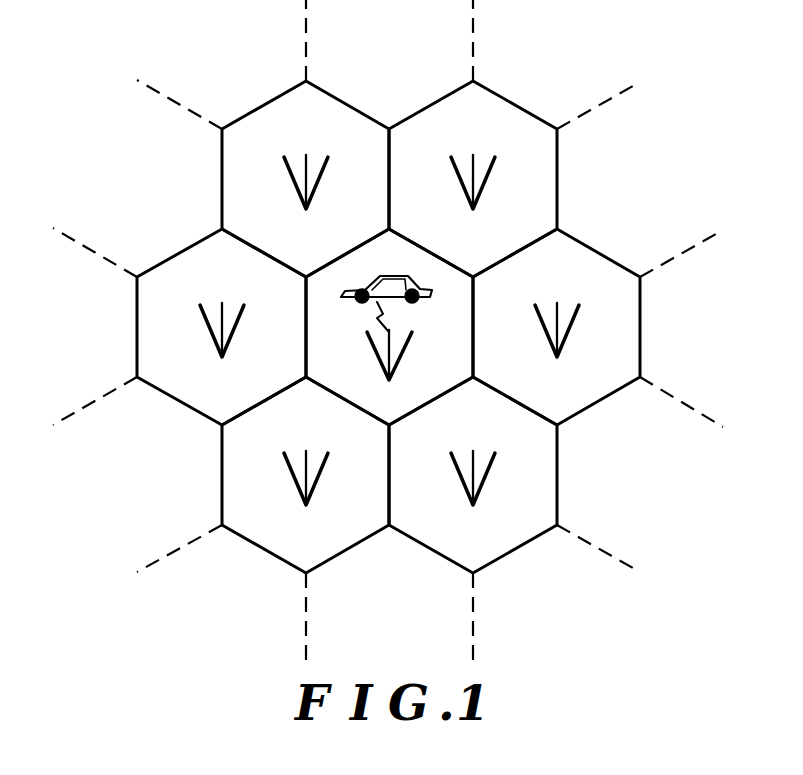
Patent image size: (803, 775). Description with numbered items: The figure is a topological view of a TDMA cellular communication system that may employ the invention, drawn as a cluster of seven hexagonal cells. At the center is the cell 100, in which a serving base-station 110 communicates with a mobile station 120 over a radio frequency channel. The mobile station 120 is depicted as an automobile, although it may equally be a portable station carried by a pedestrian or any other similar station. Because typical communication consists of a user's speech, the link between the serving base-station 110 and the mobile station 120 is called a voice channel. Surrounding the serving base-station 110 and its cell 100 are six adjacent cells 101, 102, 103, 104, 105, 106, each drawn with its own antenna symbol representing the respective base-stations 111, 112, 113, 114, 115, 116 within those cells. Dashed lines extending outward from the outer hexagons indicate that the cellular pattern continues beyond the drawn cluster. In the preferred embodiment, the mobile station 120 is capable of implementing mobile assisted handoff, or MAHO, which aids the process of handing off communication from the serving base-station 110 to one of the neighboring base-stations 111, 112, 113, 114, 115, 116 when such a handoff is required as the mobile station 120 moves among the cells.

The cell 100 is at (389, 327).
The adjacent cell 101 is at (221, 327).
The adjacent cell 102 is at (305, 475).
The adjacent cell 103 is at (473, 475).
The adjacent cell 104 is at (556, 327).
The adjacent cell 105 is at (473, 179).
The adjacent cell 106 is at (305, 179).
The serving base-station 110 is at (377, 356).
The base-station 111 is at (209, 333).
The base-station 112 is at (293, 481).
The base-station 113 is at (460, 481).
The base-station 114 is at (544, 333).
The base-station 115 is at (460, 185).
The base-station 116 is at (293, 185).
The mobile station 120 is at (412, 303).